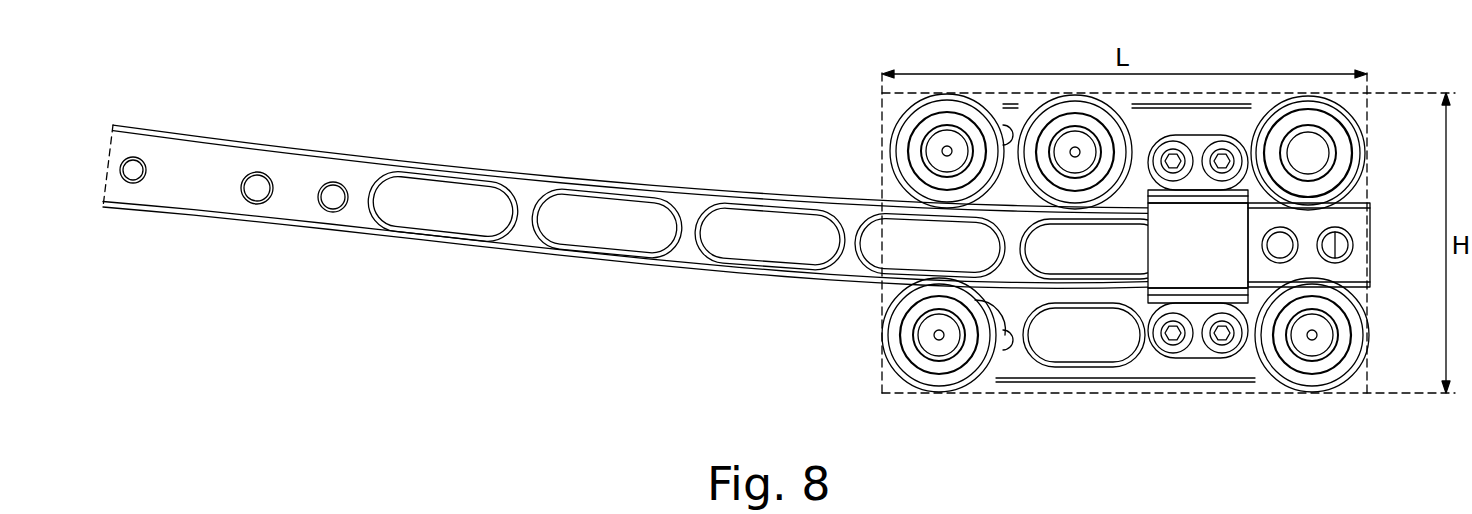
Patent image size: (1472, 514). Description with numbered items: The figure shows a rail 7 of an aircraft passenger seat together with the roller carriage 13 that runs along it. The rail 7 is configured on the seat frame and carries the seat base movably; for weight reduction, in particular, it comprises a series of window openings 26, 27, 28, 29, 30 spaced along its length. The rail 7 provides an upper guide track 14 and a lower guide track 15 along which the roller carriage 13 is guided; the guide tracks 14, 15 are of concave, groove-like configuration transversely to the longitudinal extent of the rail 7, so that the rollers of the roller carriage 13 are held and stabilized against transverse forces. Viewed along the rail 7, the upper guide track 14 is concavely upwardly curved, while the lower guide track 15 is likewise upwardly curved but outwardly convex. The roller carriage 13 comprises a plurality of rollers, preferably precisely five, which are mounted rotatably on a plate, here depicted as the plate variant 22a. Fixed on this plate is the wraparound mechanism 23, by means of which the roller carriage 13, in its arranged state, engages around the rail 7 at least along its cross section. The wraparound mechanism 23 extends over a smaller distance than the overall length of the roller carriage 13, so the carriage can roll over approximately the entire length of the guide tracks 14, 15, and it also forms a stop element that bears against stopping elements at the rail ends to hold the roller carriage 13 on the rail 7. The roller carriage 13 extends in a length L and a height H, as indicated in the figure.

The rail 7 is at (636, 232).
The roller carriage 13 is at (1155, 257).
The upper guide track 14 is at (691, 184).
The lower guide track 15 is at (679, 280).
The plate variant 22a is at (1215, 120).
The wraparound mechanism 23 is at (1235, 233).
The window opening 26 is at (1095, 249).
The window opening 27 is at (875, 268).
The window opening 28 is at (771, 262).
The window opening 29 is at (598, 256).
The window opening 30 is at (443, 243).